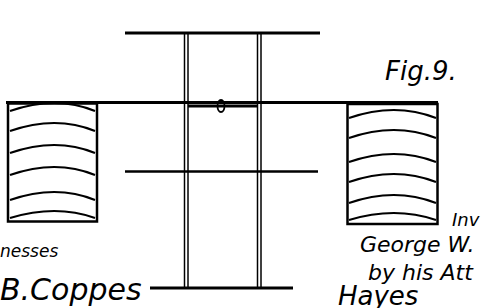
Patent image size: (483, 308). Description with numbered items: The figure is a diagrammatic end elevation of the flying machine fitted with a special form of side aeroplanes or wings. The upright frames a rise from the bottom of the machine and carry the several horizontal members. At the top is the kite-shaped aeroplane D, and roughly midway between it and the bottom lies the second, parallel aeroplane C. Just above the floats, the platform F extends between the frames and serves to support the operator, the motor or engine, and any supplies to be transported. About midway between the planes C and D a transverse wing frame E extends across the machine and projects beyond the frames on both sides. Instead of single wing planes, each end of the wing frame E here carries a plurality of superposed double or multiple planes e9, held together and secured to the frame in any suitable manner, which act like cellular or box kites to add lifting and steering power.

The top aeroplane D is at (216, 35).
The upright frame a is at (261, 73).
The wing frame E is at (316, 100).
The second aeroplane C is at (232, 173).
The platform F is at (222, 286).
The superposed double or multiple planes e9 is at (223, 163).